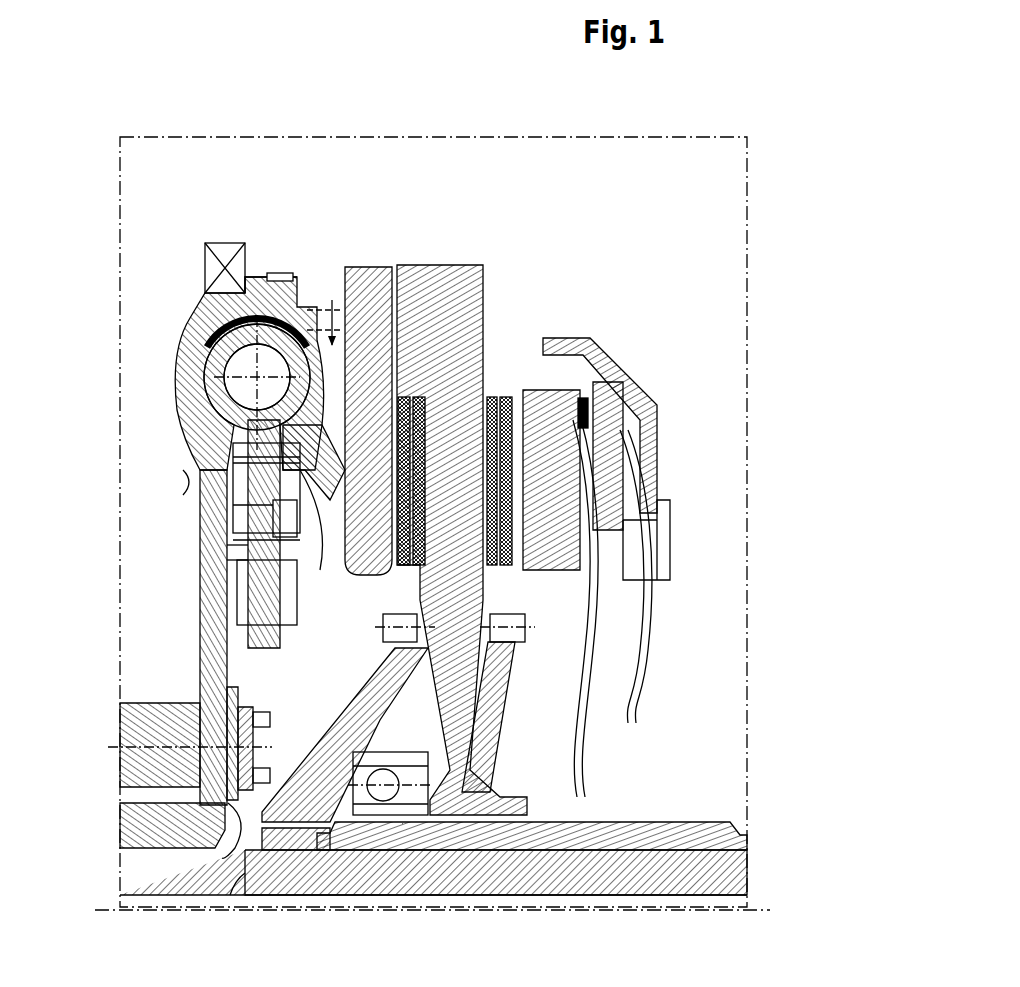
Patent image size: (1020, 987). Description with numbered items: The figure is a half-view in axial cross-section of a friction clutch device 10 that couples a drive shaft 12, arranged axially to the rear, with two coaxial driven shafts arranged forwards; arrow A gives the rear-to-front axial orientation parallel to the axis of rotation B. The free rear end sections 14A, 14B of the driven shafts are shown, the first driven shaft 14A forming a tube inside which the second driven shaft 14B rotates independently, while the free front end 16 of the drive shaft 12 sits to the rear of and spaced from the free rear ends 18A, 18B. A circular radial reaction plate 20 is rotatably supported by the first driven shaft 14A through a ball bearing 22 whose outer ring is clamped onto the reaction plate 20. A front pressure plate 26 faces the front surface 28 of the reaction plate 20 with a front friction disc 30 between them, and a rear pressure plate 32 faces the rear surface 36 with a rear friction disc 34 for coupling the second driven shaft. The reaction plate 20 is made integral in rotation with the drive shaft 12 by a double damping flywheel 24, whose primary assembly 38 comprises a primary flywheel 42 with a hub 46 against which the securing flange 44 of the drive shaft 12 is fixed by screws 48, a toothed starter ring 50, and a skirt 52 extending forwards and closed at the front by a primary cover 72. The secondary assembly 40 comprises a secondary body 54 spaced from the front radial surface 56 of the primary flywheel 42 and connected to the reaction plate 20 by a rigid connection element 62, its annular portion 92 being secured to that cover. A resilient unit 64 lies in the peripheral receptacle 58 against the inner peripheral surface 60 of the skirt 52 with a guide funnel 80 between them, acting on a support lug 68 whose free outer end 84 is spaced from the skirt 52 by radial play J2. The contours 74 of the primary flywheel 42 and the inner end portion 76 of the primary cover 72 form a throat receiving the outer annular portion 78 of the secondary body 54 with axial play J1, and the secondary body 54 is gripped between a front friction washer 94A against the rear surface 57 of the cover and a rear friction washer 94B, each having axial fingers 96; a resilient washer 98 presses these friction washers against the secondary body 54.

The clutch device 10 is at (330, 134).
The drive shaft 12 is at (150, 830).
The first driven shaft 14A is at (680, 830).
The second driven shaft 14B is at (625, 870).
The free front end 16 is at (205, 858).
The free rear end 18A is at (318, 835).
The free rear end 18B is at (225, 880).
The reaction plate 20 is at (450, 255).
The ball bearing 22 is at (390, 778).
The double damping flywheel 24 is at (235, 225).
The front pressure plate 26 is at (555, 415).
The front surface 28 is at (487, 543).
The front friction disc 30 is at (540, 390).
The rear pressure plate 32 is at (378, 340).
The rear friction disc 34 is at (403, 400).
The rear surface 36 is at (403, 560).
The primary assembly 38 is at (202, 370).
The secondary assembly 40 is at (238, 460).
The primary flywheel 42 is at (200, 393).
The securing flange 44 is at (150, 788).
The hub 46 is at (200, 705).
The screws 48 is at (272, 740).
The toothed starter ring 50 is at (222, 247).
The skirt 52 is at (258, 277).
The secondary body 54 is at (300, 530).
The front radial surface 56 is at (215, 612).
The rear surface 57 is at (300, 500).
The peripheral receptacle 58 is at (196, 345).
The inner peripheral surface 60 is at (210, 300).
The connection element 62 is at (306, 552).
The resilient unit 64 is at (207, 363).
The support lug 68 is at (247, 390).
The primary cover 72 is at (295, 305).
The contours 74 is at (210, 445).
The inner end portion 76 is at (300, 475).
The outer annular portion 78 is at (240, 505).
The guide funnel 80 is at (270, 300).
The free outer end 84 is at (222, 316).
The annular portion 92 is at (270, 648).
The front friction washer 94A is at (248, 560).
The rear friction washer 94B is at (265, 540).
The axial fingers 96 is at (243, 520).
The clip 98 is at (188, 486).
The axial play J1 is at (195, 433).
The radial play J2 is at (332, 312).
The axial orientation arrow A is at (450, 950).
The axis of rotation B is at (705, 912).